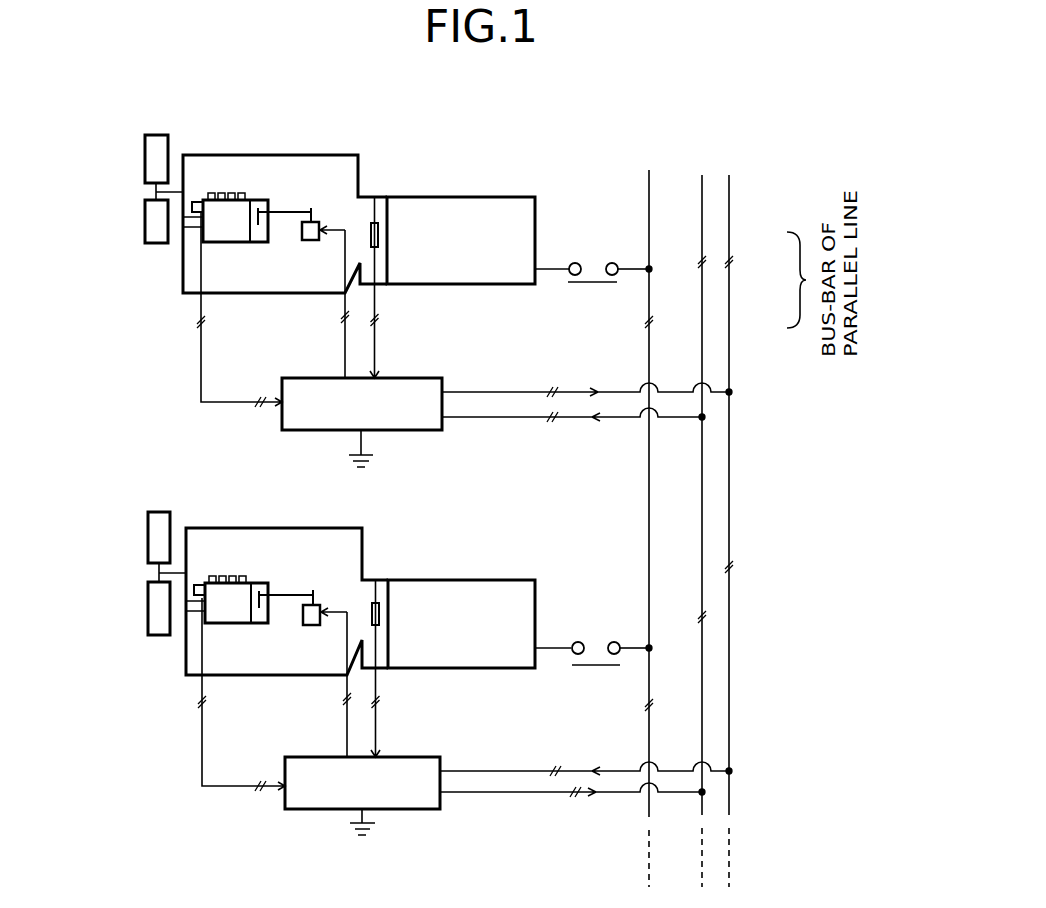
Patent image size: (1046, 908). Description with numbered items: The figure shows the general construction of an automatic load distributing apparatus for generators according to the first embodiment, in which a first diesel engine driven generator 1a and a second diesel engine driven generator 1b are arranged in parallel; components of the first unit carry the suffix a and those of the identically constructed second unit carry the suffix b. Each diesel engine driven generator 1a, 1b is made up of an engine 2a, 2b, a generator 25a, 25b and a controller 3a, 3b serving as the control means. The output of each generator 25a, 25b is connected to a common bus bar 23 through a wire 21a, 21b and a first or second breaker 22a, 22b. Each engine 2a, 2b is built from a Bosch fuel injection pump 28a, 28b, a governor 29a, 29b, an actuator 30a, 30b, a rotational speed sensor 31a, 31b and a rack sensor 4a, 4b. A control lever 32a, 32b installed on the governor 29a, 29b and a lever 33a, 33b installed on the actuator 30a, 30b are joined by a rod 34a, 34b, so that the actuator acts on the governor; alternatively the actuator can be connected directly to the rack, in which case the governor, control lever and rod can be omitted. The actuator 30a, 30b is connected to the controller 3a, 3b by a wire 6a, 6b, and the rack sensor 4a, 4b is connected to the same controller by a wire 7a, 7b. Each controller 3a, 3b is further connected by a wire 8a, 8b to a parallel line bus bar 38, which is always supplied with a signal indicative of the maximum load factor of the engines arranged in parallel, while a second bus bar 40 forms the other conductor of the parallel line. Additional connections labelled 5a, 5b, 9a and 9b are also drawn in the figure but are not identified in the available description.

The first diesel engine driven generator 1a is at (155, 277).
The second diesel engine driven generator 1b is at (155, 660).
The first engine 2a is at (279, 153).
The second engine 2b is at (282, 527).
The first controller 3a is at (402, 378).
The second controller 3b is at (403, 757).
The first rack sensor 4a is at (202, 215).
The second rack sensor 4b is at (203, 598).
The rotational speed signal line 5a is at (345, 325).
The rotational speed signal line 5b is at (347, 705).
The wire 6a is at (375, 356).
The wire 6b is at (375, 735).
The wire 7a is at (201, 378).
The wire 7b is at (202, 758).
The wire 8a is at (486, 392).
The wire 8b is at (478, 771).
The communication line 9a is at (486, 417).
The communication line 9b is at (478, 792).
The wire 21a is at (571, 264).
The wire 21b is at (553, 645).
The first breaker 22a is at (595, 270).
The second breaker 22b is at (596, 652).
The bus bar 23 is at (649, 198).
The first generator 25a is at (470, 197).
The second generator 25b is at (470, 580).
The first Bosch fuel injection pump 28a is at (220, 242).
The second Bosch fuel injection pump 28b is at (221, 623).
The first governor 29a is at (260, 242).
The second governor 29b is at (260, 623).
The first actuator 30a is at (299, 210).
The second actuator 30b is at (302, 595).
The first rotational speed sensor 31a is at (379, 225).
The second rotational speed sensor 31b is at (381, 605).
The control lever 32a is at (268, 220).
The control lever 32b is at (268, 600).
The lever 33a is at (311, 210).
The lever 33b is at (314, 595).
The rod 34a is at (277, 210).
The rod 34b is at (279, 595).
The parallel line bus bar 38 is at (729, 233).
The bus bar of parallel line 40 is at (702, 287).